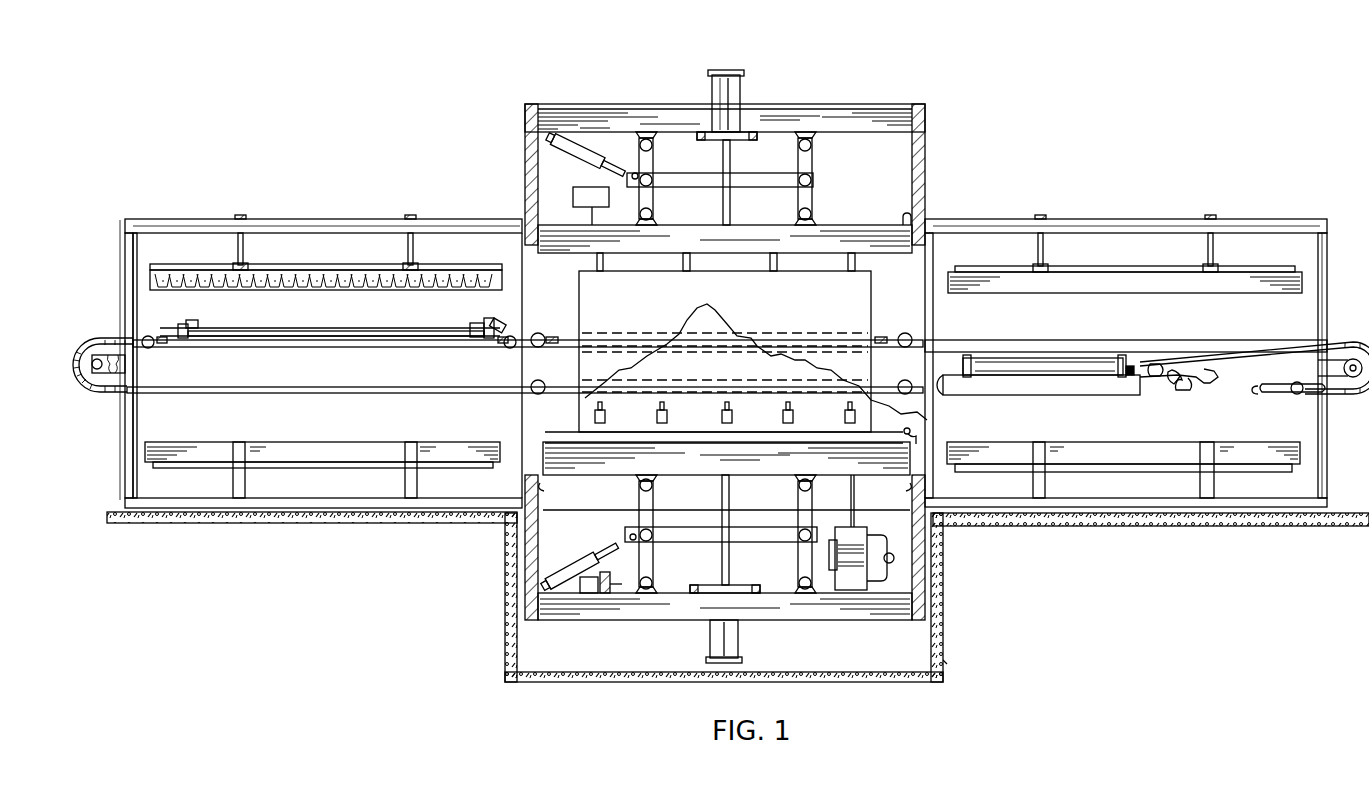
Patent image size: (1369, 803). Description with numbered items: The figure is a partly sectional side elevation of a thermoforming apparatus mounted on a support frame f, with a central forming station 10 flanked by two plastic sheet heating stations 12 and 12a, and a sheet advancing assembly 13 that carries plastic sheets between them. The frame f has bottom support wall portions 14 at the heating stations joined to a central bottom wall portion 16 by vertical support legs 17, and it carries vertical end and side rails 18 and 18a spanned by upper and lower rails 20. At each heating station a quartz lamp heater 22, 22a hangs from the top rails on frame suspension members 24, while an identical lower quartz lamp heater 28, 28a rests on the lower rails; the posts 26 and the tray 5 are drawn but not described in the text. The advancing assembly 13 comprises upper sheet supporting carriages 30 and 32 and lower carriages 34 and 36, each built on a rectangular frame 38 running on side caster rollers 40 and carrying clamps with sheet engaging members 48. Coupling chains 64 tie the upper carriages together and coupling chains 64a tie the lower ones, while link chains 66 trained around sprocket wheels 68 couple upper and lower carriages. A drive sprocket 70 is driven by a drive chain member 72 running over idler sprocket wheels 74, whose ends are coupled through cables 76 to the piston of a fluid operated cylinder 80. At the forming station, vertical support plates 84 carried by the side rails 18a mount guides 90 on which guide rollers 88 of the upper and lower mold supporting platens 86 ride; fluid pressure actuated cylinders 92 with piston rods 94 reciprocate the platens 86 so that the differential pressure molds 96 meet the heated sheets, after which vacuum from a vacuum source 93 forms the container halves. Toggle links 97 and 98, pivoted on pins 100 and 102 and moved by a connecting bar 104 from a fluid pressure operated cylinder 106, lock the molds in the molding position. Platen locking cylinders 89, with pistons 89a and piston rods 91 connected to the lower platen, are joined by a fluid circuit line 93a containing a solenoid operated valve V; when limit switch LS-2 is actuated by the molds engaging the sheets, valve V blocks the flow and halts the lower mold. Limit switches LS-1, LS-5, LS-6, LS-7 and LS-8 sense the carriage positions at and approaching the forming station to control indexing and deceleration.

The central forming station 10 is at (783, 90).
The plastic sheet heating station 12 is at (350, 157).
The plastic sheet heating station 12a is at (1135, 196).
The sheet advancing assembly 13 is at (111, 300).
The bottom support wall portion 14 is at (330, 524).
The central bottom wall portion 16 is at (663, 682).
The vertical support leg 17 is at (938, 606).
The vertical end rail 18 is at (1318, 280).
The vertical side rail 18a is at (522, 300).
The upper and lower rails 20 is at (332, 222).
The quartz lamp heater 22 is at (278, 270).
The quartz lamp heater 22a is at (1108, 276).
The frame suspension member 24 is at (240, 248).
The shelf support post 26 is at (244, 484).
The quartz lamp heater 28 is at (324, 448).
The quartz lamp heater 28a is at (1128, 456).
The upper plastic sheet supporting carriage member 30 is at (353, 339).
The tray 5 is at (258, 340).
The upper plastic sheet supporting carriage member 32 is at (702, 332).
The lower plastic sheet supporting carriage member 34 is at (696, 388).
The lower plastic sheet supporting carriage member 36 is at (1280, 392).
The rectangular frame 38 is at (508, 348).
The side caster roller 40 is at (150, 340).
The sheet engaging member 48 is at (482, 326).
The coupling chain 64 is at (536, 336).
The coupling chain 64a is at (910, 387).
The link chain 66 is at (106, 388).
The sprocket wheel 68 is at (101, 358).
The drive sprocket 70 is at (1351, 388).
The drive chain member 72 is at (1342, 350).
The idler sprocket wheel 74 is at (1180, 384).
The cable 76 is at (1106, 390).
The fluid operated cylinder 80 is at (1054, 358).
The vertical support plate 84 is at (925, 136).
The mold supporting platen 86 is at (882, 252).
The guide roller 88 is at (898, 218).
The platen locking cylinder 89 is at (838, 530).
The piston 89a is at (832, 558).
The guide 90 is at (927, 173).
The piston rod 91 is at (862, 506).
The fluid pressure actuated cylinder 92 is at (710, 89).
The vacuum source 93 is at (584, 196).
The fluid circuit line 93a is at (879, 590).
The piston rod 94 is at (727, 198).
The differential pressure mold 96 is at (712, 336).
The toggle link 97 is at (814, 172).
The toggle link 98 is at (796, 196).
The pin 100 is at (646, 154).
The pin 102 is at (812, 208).
The connecting bar 104 is at (688, 188).
The fluid pressure operated cylinder 106 is at (522, 158).
The solenoid operated valve V is at (897, 556).
The support frame f is at (964, 668).
The limit switch LS-1 is at (701, 415).
The limit switch LS-2 is at (914, 436).
The limit switch LS-5 is at (636, 415).
The limit switch LS-6 is at (763, 415).
The limit switch LS-7 is at (590, 416).
The limit switch LS-8 is at (846, 416).